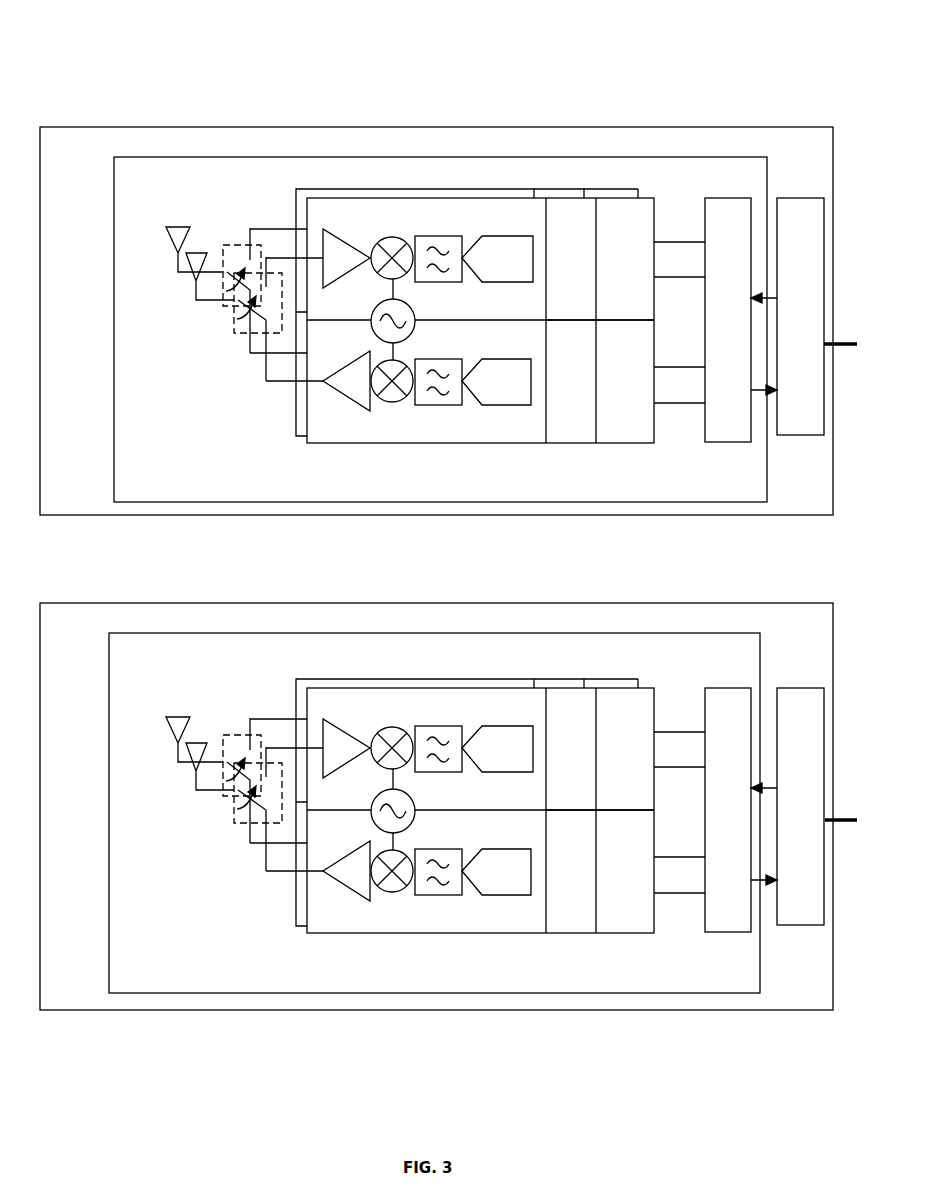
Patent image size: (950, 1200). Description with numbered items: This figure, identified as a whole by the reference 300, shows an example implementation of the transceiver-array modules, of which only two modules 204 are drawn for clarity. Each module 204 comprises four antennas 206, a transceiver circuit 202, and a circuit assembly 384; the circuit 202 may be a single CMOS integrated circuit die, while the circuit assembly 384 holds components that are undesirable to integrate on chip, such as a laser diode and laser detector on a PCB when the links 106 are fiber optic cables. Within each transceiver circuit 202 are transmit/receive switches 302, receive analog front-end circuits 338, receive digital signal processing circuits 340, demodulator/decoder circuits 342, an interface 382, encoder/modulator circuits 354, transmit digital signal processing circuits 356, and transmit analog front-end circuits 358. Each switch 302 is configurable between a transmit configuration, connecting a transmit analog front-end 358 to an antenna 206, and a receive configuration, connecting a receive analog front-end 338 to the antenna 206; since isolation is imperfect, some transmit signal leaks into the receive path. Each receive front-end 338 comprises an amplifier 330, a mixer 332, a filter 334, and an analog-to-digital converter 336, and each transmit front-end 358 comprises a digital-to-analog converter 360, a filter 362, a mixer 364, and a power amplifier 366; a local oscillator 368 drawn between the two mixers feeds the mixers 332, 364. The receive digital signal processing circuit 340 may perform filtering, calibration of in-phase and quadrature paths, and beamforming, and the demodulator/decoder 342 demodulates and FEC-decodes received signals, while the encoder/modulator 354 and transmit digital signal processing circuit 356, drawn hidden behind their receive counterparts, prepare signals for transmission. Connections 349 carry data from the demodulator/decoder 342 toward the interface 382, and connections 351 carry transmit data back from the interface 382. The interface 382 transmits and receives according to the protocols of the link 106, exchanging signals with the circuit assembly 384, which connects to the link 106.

The transceiver system 300 is at (94, 44).
The transceiver-array module 204 is at (477, 603).
The transceiver circuit 202 is at (445, 633).
The antenna 206 is at (198, 253).
The transmit/receive switch 302 is at (234, 333).
The receive analog front-end circuit 338 is at (397, 182).
The amplifier 330 is at (348, 239).
The mixer 332 is at (394, 237).
The filter 334 is at (446, 236).
The analog-to-digital converter 336 is at (515, 236).
The local oscillator 368 is at (373, 312).
The transmit analog front-end circuit 358 is at (487, 349).
The power amplifier 366 is at (360, 405).
The mixer 364 is at (398, 403).
The filter 362 is at (443, 405).
The digital to analog converter 360 is at (496, 405).
The receive digital signal processing circuit 340 is at (560, 183).
The demodulator/decoder circuit 342 is at (618, 183).
The transmit digital signal processing circuit 356 is at (586, 380).
The encoder/modulator circuit 354 is at (612, 464).
The receive data line 349 is at (667, 242).
The transmit data line 351 is at (667, 367).
The interface circuit 382 is at (742, 328).
The circuit assembly 384 is at (816, 325).
The link 106 is at (850, 335).